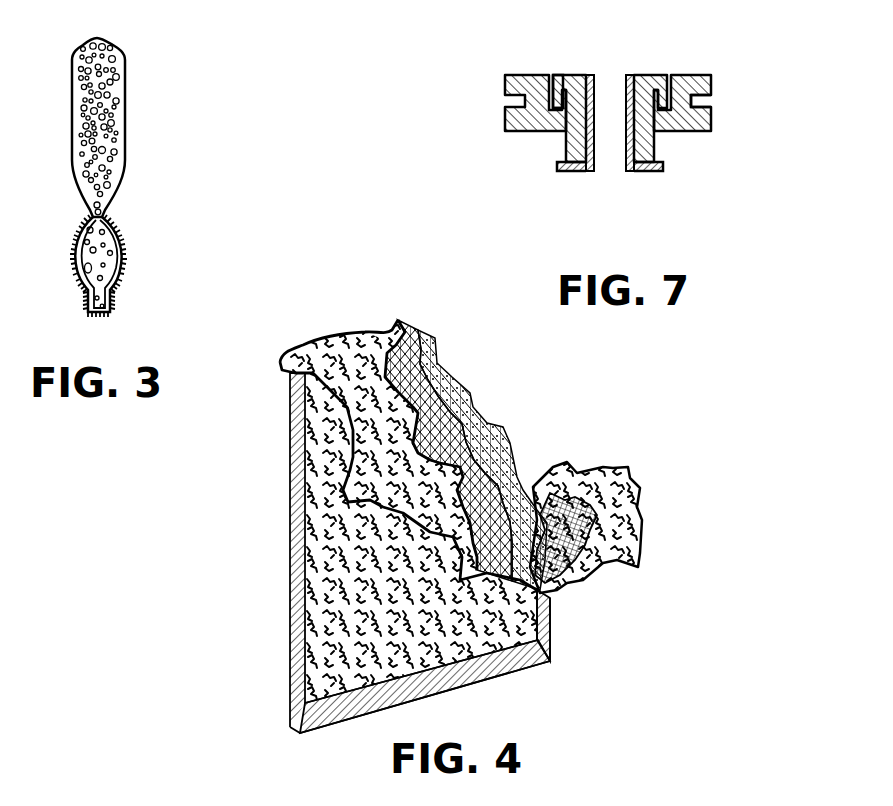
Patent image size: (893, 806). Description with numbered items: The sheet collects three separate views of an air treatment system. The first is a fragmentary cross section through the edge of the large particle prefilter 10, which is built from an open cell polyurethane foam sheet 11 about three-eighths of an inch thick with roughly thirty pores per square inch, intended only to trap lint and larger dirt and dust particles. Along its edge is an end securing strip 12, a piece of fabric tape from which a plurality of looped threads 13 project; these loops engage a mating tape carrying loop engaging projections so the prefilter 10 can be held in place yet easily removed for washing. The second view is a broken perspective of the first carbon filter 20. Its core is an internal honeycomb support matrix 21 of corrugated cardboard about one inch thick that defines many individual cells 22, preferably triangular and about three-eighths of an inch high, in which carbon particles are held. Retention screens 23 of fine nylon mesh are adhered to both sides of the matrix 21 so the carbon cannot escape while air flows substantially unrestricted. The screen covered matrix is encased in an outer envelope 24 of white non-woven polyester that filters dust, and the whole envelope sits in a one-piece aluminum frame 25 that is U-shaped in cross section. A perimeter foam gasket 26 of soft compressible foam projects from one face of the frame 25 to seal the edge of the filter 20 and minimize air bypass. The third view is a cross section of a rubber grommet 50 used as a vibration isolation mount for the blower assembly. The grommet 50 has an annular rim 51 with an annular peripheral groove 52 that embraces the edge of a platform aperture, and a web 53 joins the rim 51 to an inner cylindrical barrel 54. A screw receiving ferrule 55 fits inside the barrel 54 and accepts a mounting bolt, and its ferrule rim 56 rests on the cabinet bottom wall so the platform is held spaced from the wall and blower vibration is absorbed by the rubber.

In FIG. 3, the large particle prefilter 10 is at (165, 177).
In FIG. 3, the foam sheet 11 is at (123, 93).
In FIG. 3, the end securing strip 12 is at (122, 243).
In FIG. 3, the looped threads 13 is at (122, 283).
In FIG. 4, the first carbon filter 20 is at (404, 526).
In FIG. 4, the internal honeycomb support matrix 21 is at (515, 483).
In FIG. 4, the individual cells 22 is at (468, 400).
In FIG. 4, the retention screen 23 is at (580, 467).
In FIG. 4, the outer envelope 24 is at (367, 428).
In FIG. 4, the frame 25 is at (520, 672).
In FIG. 4, the perimeter foam gasket 26 is at (553, 658).
In FIG. 7, the rubber grommet 50 is at (584, 127).
In FIG. 7, the annular rim 51 is at (680, 133).
In FIG. 7, the annular peripheral groove 52 is at (690, 100).
In FIG. 7, the web 53 is at (555, 75).
In FIG. 7, the inner cylindrical barrel 54 is at (555, 127).
In FIG. 7, the screw receiving ferrule 55 is at (607, 163).
In FIG. 7, the ferrule rim 56 is at (652, 173).